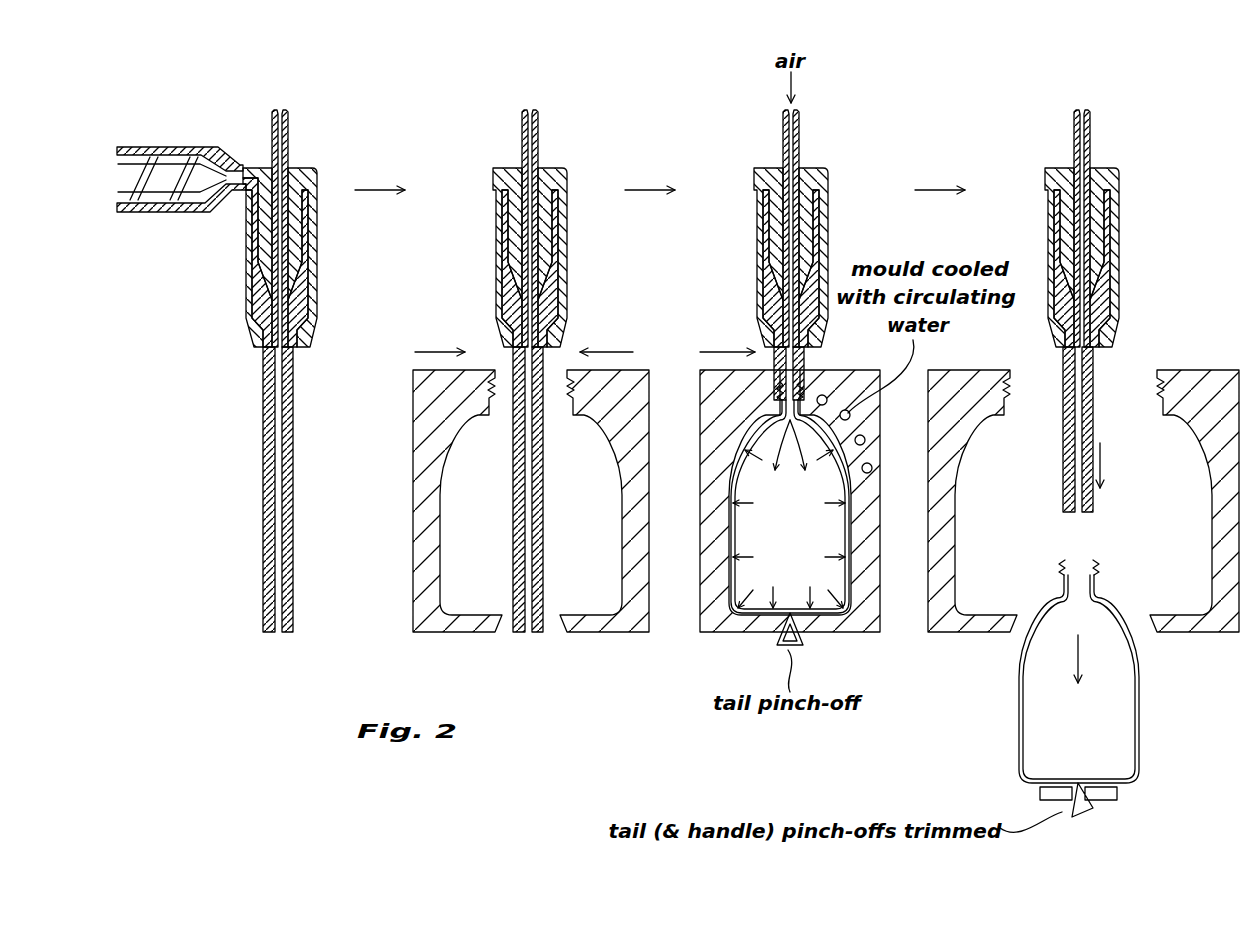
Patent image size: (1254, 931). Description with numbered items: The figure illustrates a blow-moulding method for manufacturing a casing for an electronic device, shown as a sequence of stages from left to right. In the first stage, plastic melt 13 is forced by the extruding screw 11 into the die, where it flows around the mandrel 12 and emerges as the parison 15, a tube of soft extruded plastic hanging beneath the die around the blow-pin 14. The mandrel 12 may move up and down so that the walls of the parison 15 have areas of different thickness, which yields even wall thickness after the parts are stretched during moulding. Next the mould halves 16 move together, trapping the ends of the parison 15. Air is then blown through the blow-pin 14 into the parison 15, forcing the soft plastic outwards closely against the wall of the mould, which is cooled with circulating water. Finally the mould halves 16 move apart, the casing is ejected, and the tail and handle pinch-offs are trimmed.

The extruding screw 11 is at (162, 172).
The mandrel 12 is at (268, 285).
The plastic melt 13 is at (302, 280).
The blow-pin 14 is at (272, 378).
The parison 15 is at (187, 632).
The mould halves 16 is at (612, 634).